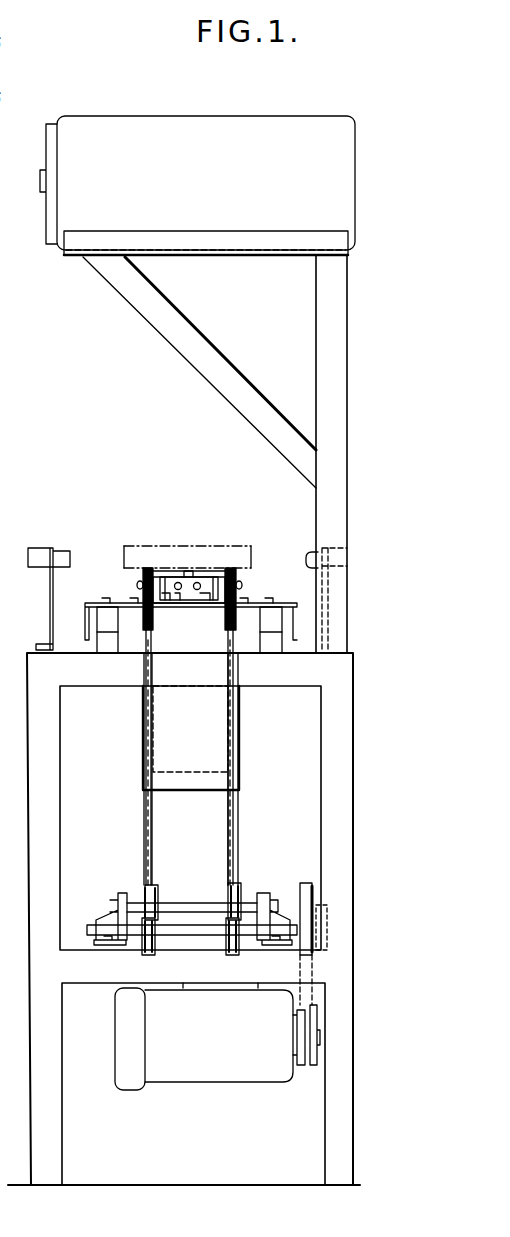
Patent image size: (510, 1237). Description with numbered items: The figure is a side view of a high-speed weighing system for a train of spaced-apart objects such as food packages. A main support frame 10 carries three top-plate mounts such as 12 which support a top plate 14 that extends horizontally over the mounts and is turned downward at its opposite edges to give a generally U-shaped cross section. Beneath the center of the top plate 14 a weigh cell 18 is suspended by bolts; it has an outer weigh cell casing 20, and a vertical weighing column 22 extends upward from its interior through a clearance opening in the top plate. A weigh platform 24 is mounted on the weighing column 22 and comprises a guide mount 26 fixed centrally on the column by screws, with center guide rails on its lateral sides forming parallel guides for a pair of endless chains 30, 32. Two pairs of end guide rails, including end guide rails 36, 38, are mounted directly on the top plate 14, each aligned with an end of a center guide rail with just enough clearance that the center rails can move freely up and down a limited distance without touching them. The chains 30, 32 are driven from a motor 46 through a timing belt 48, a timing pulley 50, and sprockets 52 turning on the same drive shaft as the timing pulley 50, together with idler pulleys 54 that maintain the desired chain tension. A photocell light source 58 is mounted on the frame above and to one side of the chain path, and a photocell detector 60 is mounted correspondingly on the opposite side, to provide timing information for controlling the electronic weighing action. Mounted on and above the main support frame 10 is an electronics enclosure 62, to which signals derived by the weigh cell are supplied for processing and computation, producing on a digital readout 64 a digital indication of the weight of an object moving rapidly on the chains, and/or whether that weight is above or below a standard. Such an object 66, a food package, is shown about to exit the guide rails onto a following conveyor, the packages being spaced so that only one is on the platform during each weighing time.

The main support frame 10 is at (32, 831).
The top-plate mount 12 is at (104, 620).
The top plate 14 is at (120, 603).
The weigh cell 18 is at (213, 774).
The weigh cell casing 20 is at (173, 725).
The weighing column 22 is at (190, 571).
The weigh platform 24 is at (242, 572).
The guide mount 26 is at (190, 590).
The chain 30 is at (148, 810).
The chain 32 is at (238, 842).
The end guide rail 36 is at (242, 594).
The end guide rail 38 is at (140, 565).
The motor 46 is at (216, 1045).
The timing belt 48 is at (310, 1000).
The timing pulley 50 is at (296, 882).
The sprockets 52 is at (150, 952).
The idler pulleys 54 is at (174, 890).
The photocell light source 58 is at (312, 552).
The photocell detector 60 is at (60, 557).
The electronics enclosure 62 is at (200, 194).
The digital readout 64 is at (42, 175).
The object 66 is at (165, 545).